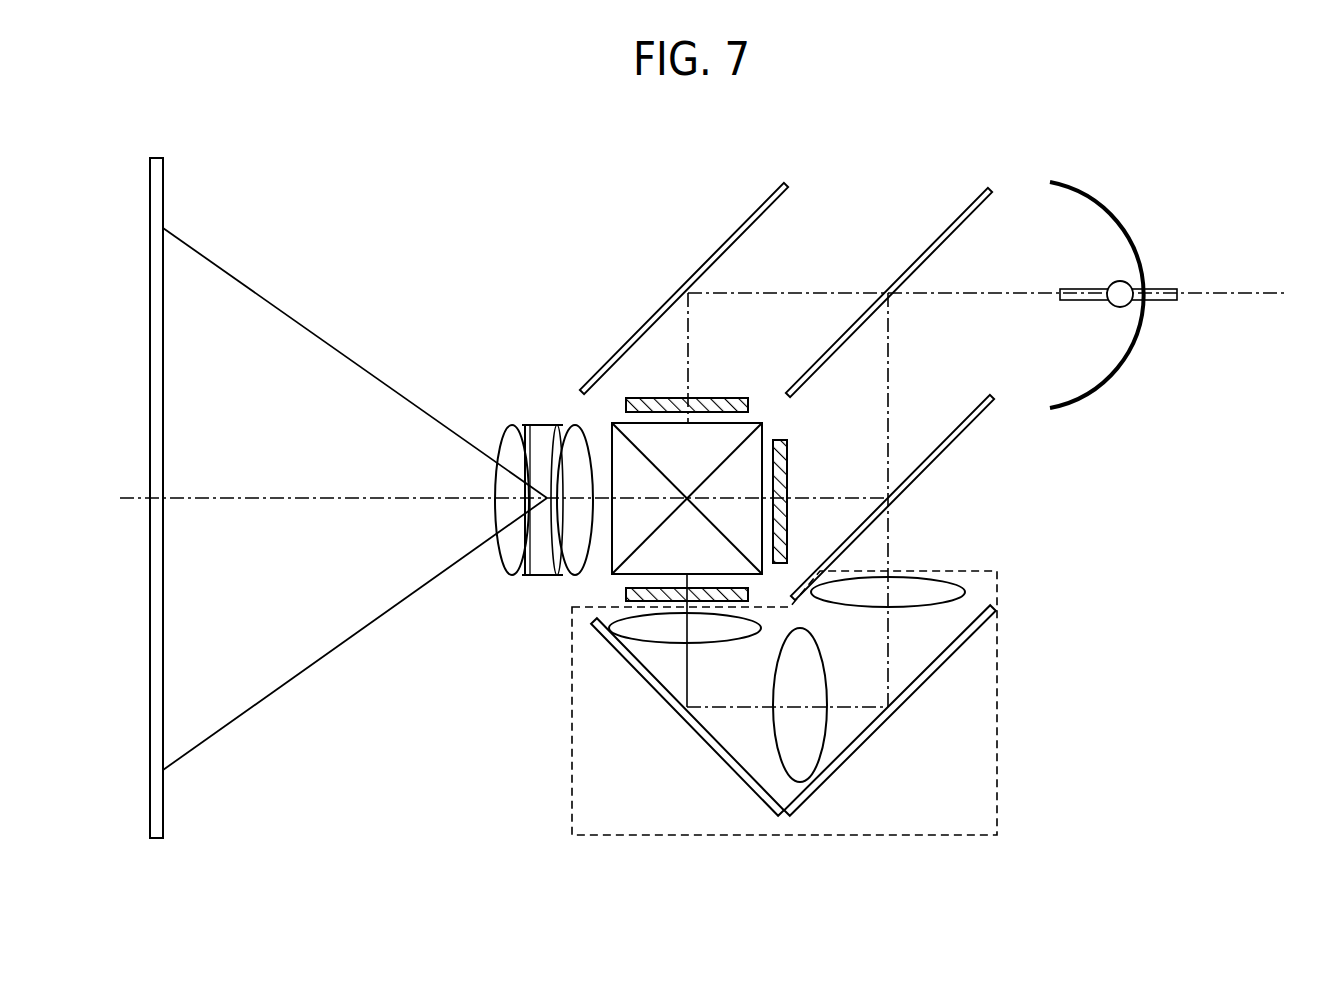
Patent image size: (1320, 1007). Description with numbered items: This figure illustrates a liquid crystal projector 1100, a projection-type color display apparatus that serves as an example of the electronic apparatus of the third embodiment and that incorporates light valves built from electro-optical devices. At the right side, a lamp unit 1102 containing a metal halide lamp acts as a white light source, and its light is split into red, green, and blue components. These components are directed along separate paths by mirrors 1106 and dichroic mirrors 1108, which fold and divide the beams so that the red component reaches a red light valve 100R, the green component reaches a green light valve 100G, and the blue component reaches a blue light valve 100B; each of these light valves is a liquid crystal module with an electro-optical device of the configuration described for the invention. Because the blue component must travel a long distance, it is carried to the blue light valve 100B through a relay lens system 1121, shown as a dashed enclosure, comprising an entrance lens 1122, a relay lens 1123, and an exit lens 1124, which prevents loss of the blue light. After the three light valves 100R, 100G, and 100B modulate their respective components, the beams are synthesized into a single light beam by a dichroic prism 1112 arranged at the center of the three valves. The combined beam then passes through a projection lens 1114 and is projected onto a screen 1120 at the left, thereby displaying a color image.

The liquid crystal projector 1100 is at (1064, 116).
The lamp unit 1102 is at (1128, 350).
The mirror 1106 is at (725, 238).
The dichroic mirror 1108 is at (933, 244).
The dichroic prism 1112 is at (628, 465).
The projection lens 1114 is at (593, 424).
The screen 1120 is at (165, 196).
The relay lens system 1121 is at (997, 790).
The entrance lens 1122 is at (933, 580).
The relay lens 1123 is at (812, 738).
The exit lens 1124 is at (650, 637).
The red light valve 100R is at (722, 398).
The green light valve 100G is at (787, 490).
The blue light valve 100B is at (625, 592).